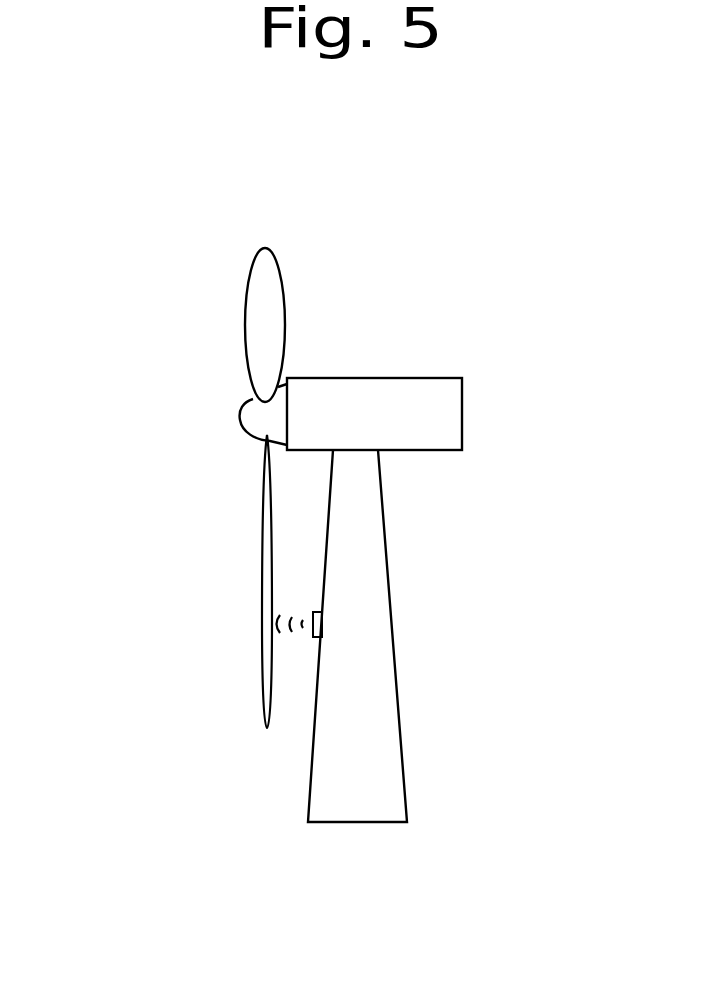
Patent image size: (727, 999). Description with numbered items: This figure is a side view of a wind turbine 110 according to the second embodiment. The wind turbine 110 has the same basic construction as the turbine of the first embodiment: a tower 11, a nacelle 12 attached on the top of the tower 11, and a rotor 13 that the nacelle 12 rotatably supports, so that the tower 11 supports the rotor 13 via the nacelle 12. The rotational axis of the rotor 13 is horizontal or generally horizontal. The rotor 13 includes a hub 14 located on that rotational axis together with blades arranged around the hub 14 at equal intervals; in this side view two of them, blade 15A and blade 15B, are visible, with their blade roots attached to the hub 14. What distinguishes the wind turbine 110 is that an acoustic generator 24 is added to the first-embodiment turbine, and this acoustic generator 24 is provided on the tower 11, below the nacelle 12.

The wind turbine 110 is at (267, 204).
The tower 11 is at (390, 583).
The nacelle 12 is at (358, 377).
The rotor 13 is at (147, 277).
The hub 14 is at (243, 406).
The blade 15A is at (262, 582).
The blade 15B is at (280, 275).
The acoustic generator 24 is at (320, 612).